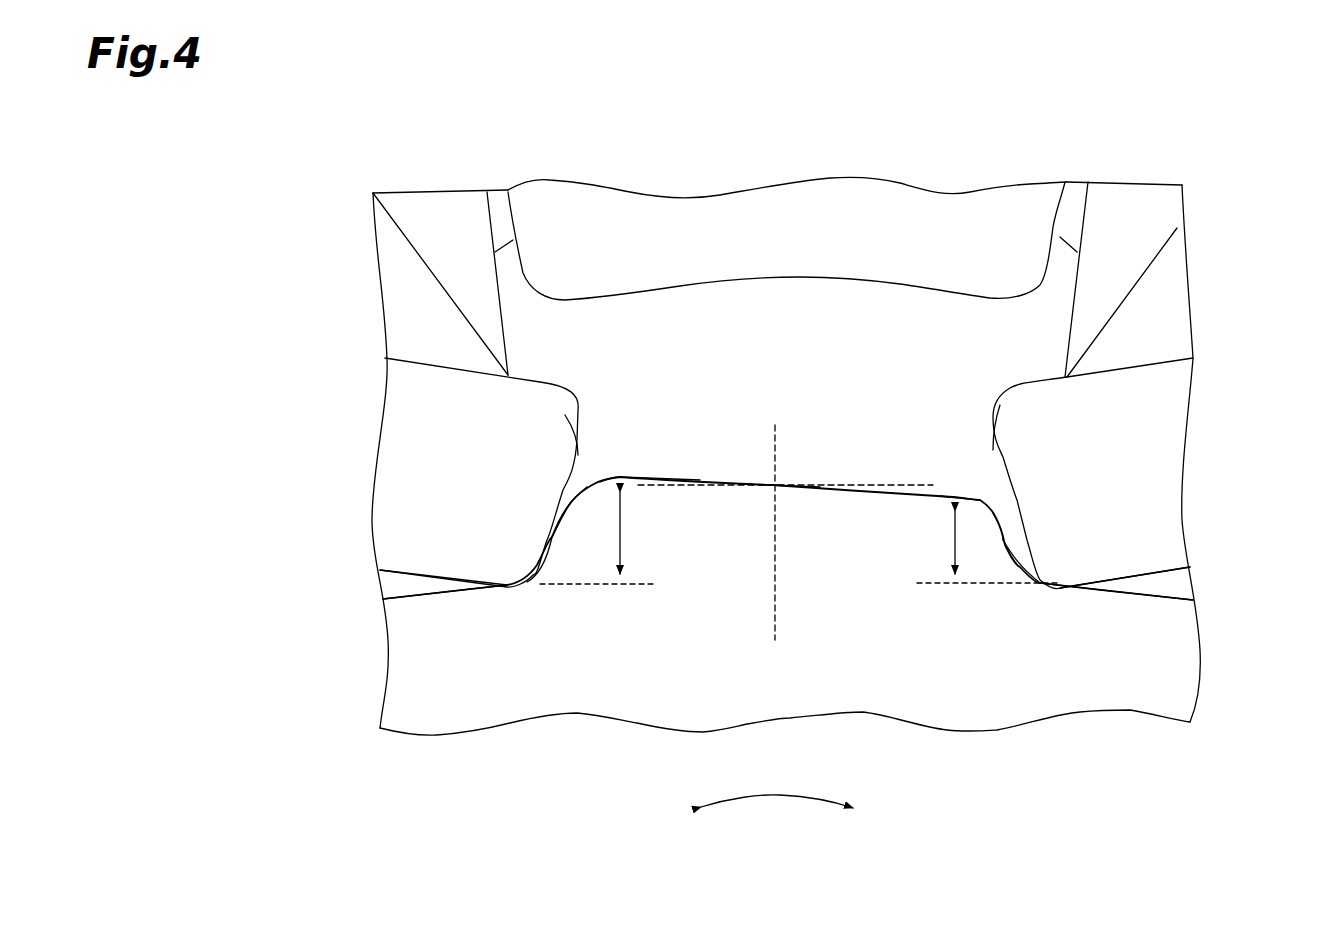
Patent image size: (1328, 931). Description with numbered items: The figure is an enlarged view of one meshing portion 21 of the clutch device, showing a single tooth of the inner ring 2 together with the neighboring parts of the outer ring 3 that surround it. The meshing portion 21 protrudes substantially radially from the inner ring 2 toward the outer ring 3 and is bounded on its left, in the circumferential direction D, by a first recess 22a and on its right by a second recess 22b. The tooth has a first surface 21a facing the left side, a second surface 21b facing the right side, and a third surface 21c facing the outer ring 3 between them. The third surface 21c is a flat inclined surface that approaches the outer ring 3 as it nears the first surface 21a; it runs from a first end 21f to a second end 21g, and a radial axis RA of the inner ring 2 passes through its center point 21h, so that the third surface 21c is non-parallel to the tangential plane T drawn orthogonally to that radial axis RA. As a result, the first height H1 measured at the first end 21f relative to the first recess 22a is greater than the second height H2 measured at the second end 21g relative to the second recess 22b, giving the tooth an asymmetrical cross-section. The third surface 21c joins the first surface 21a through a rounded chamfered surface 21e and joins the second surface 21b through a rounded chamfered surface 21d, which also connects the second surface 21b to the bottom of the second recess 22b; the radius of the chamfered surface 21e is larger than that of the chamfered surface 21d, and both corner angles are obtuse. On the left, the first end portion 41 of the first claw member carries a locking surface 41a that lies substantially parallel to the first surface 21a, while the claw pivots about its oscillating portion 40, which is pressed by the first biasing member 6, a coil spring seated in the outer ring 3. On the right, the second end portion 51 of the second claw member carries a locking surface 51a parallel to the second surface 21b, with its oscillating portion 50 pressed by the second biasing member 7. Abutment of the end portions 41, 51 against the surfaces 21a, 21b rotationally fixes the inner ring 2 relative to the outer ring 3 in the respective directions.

The inner ring 2 is at (610, 680).
The outer ring 3 is at (778, 213).
The first biasing member 6 is at (517, 233).
The second biasing member 7 is at (1057, 230).
The meshing portion 21 is at (748, 512).
The first surface 21a is at (567, 528).
The second surface 21b is at (1000, 533).
The third surface 21c is at (665, 480).
The chamfered surface 21d is at (1020, 507).
The chamfered surface 21e is at (578, 495).
The first end 21f is at (618, 477).
The second end 21g is at (957, 497).
The center point 21h is at (803, 386).
The first recess 22a is at (443, 588).
The second recess 22b is at (1123, 587).
The oscillating portion 40 is at (380, 580).
The first end portion 41 is at (537, 413).
The locking surface 41a is at (560, 447).
The oscillating portion 50 is at (1175, 588).
The second end portion 51 is at (1033, 393).
The locking surface 51a is at (1002, 450).
The first height H1 is at (602, 538).
The second height H2 is at (987, 547).
The tangential plane T is at (877, 478).
The radial axis RA is at (780, 596).
The circumferential direction D is at (778, 797).